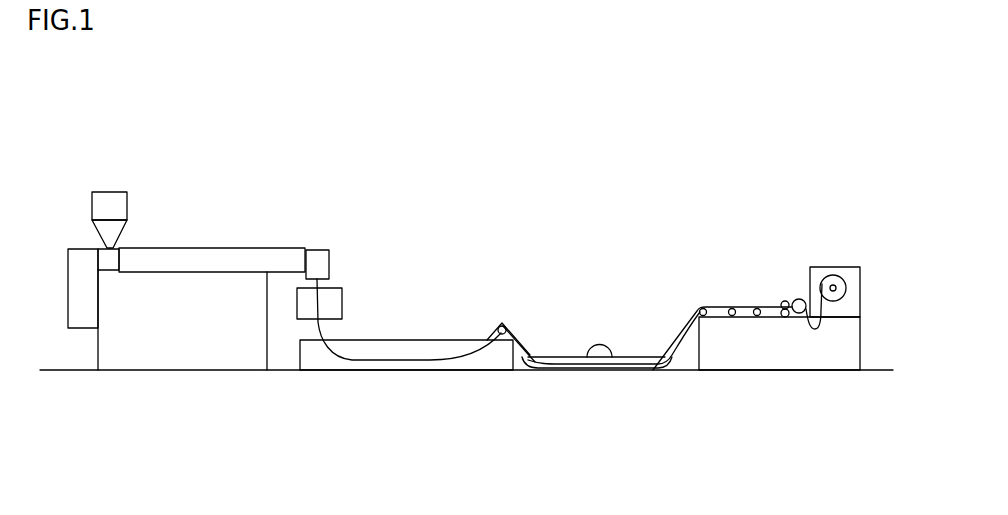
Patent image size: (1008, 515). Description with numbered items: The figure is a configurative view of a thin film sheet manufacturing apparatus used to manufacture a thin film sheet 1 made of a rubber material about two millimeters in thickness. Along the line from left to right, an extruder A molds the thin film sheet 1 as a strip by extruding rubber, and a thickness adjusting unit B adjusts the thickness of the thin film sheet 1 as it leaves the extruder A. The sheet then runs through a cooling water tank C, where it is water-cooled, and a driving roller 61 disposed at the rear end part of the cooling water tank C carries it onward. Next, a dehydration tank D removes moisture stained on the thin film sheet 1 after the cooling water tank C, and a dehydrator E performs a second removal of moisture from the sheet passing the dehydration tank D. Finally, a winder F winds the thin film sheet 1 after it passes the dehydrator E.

The extruder A is at (193, 248).
The thickness adjusting unit B is at (345, 298).
The cooling water tank C is at (413, 338).
The thin film sheet 1 is at (453, 358).
The driving roller 61 is at (503, 323).
The dehydration tank D is at (603, 357).
The dehydrator E is at (743, 286).
The winder F is at (847, 267).